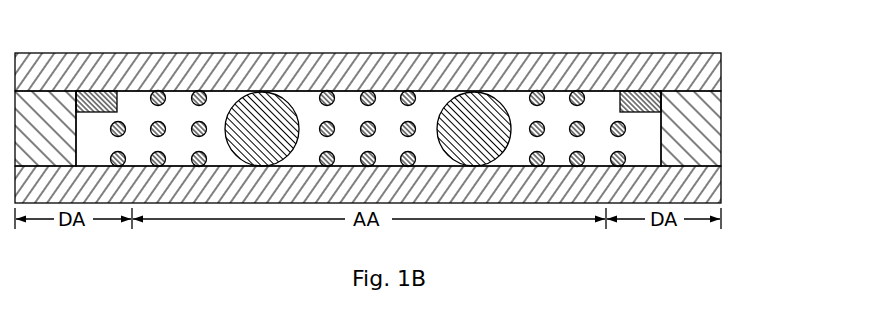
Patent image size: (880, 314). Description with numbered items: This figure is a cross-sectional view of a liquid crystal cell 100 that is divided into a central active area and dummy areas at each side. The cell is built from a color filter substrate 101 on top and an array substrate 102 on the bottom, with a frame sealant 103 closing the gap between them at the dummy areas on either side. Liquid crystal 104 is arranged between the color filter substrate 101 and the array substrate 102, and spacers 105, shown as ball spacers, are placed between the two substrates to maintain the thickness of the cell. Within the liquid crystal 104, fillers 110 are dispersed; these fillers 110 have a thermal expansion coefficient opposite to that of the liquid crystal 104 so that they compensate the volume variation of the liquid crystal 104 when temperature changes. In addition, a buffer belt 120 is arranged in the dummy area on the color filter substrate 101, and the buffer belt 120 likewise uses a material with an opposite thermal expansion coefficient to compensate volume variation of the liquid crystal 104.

The liquid crystal cell 100 is at (58, 38).
The color filter substrate 101 is at (396, 65).
The array substrate 102 is at (396, 178).
The frame sealant 103 is at (396, 128).
The liquid crystal 104 is at (368, 89).
The spacers 105 is at (383, 89).
The fillers 110 is at (387, 90).
The buffer belt 120 is at (368, 62).